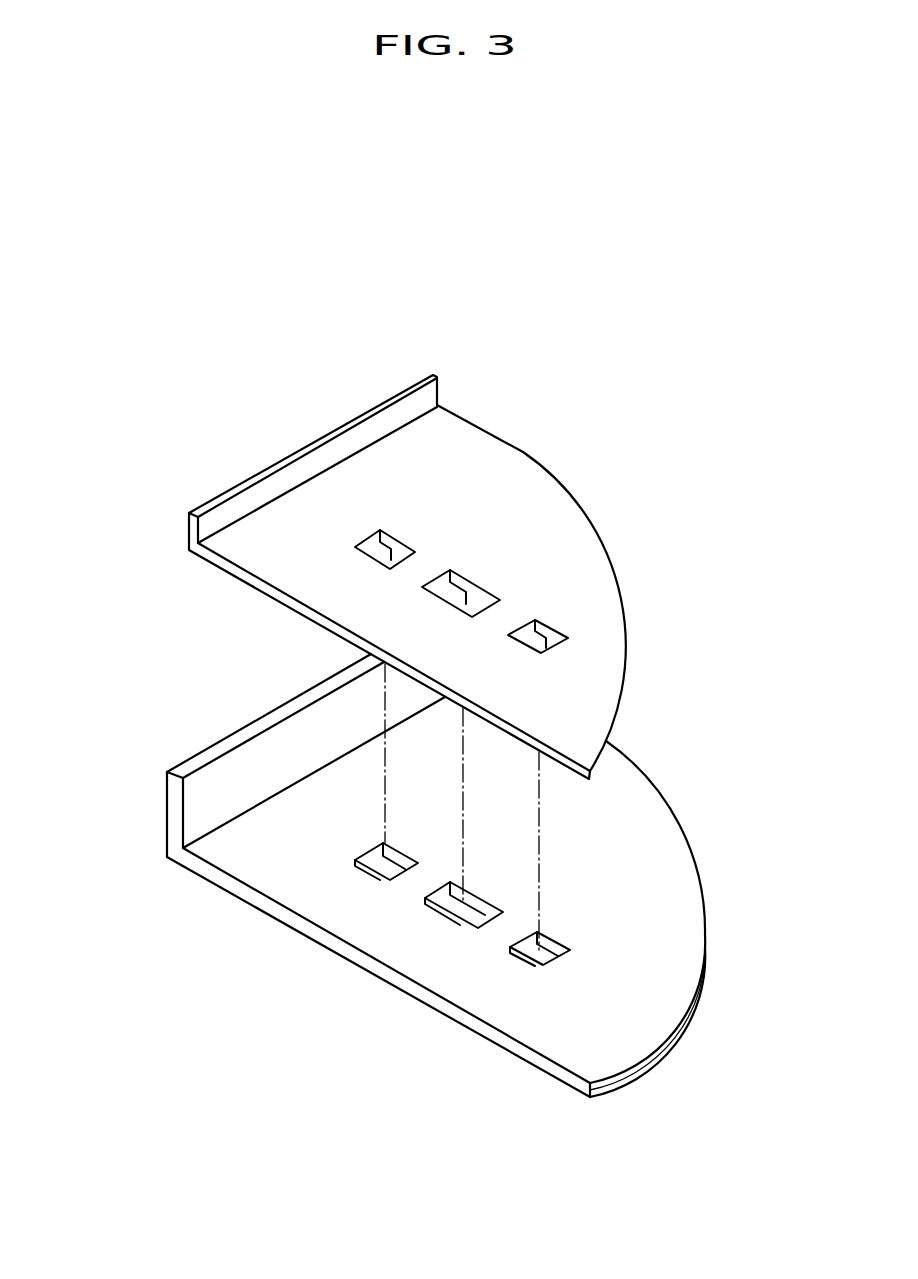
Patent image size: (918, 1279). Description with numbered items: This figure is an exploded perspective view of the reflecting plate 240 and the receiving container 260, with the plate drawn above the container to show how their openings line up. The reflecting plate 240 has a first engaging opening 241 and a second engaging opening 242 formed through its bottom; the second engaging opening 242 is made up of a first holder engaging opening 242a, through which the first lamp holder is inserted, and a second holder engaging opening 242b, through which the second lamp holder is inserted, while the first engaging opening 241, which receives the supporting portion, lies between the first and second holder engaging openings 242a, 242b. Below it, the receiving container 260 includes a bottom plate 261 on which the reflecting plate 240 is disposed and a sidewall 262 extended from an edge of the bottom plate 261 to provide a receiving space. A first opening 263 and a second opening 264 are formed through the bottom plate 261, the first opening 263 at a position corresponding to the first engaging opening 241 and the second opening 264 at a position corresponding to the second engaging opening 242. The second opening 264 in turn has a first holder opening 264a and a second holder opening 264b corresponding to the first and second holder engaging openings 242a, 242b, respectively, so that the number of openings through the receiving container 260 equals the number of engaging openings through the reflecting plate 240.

The reflecting plate 240 is at (466, 574).
The first engaging opening 241 is at (422, 587).
The second engaging opening 242 is at (556, 370).
The first holder engaging opening 242a is at (390, 537).
The second holder engaging opening 242b is at (545, 632).
The receiving container 260 is at (448, 916).
The bottom plate 261 is at (557, 1050).
The sidewall 262 is at (198, 805).
The first opening 263 is at (476, 903).
The second opening 264 is at (373, 1132).
The first holder opening 264a is at (383, 870).
The second holder opening 264b is at (540, 955).